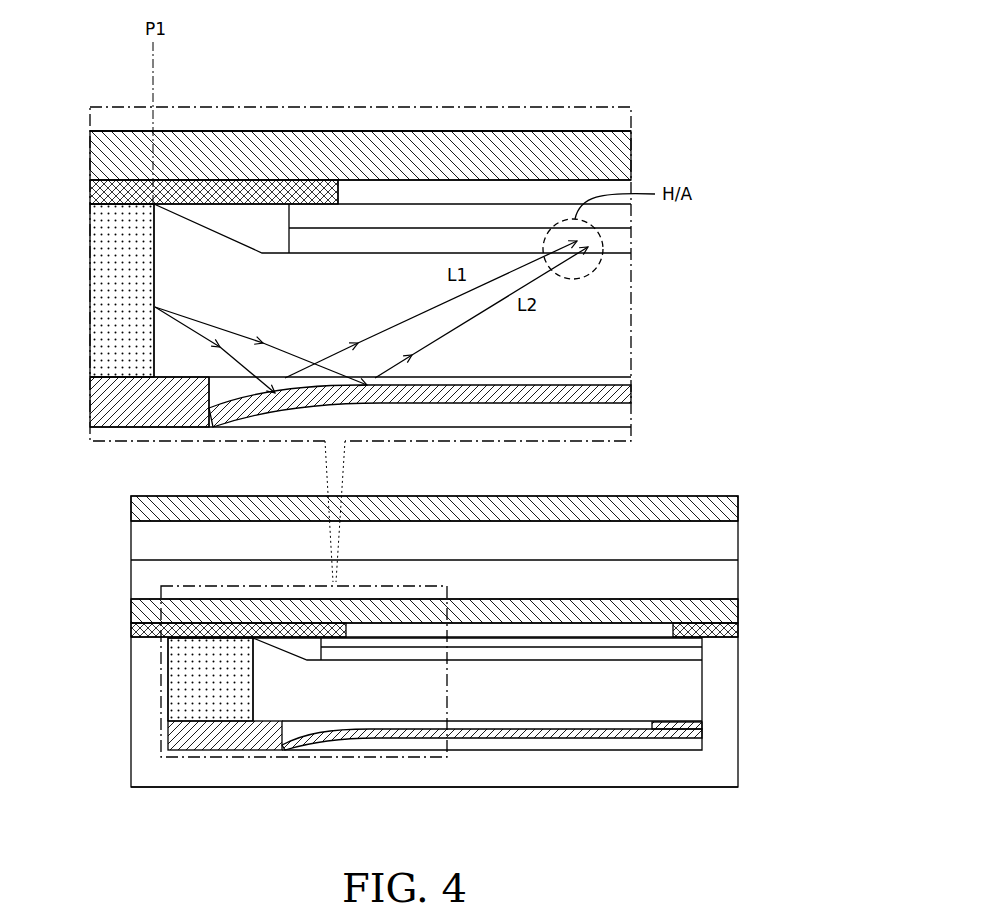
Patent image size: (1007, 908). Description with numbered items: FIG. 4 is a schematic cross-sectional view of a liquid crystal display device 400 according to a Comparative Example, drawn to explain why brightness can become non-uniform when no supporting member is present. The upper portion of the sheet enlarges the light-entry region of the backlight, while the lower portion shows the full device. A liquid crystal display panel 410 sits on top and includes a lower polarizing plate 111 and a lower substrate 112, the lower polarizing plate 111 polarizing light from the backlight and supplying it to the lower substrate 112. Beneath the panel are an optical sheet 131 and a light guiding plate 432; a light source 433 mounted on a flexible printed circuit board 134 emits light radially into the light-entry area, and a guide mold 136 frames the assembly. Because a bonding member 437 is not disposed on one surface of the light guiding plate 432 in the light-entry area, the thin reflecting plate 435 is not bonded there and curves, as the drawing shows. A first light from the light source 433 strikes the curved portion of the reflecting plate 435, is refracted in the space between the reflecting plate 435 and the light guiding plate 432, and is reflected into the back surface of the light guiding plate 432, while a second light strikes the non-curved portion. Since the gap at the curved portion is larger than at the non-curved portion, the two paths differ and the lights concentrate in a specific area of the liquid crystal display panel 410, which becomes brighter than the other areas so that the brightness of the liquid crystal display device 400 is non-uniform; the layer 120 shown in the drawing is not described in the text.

The lower substrate 112 is at (120, 115).
The lower polarizing plate 111 is at (118, 160).
The adhesive layer 120 is at (120, 192).
The optical sheet 131 is at (618, 213).
The light guiding plate 432 is at (608, 317).
The light source 433 is at (122, 313).
The flexible printed circuit board 134 is at (120, 406).
The reflecting plate 435 is at (610, 394).
The guide mold 136 is at (608, 437).
The liquid crystal display device 400 is at (741, 478).
The liquid crystal display panel 410 is at (745, 496).
The bonding member 437 is at (688, 728).